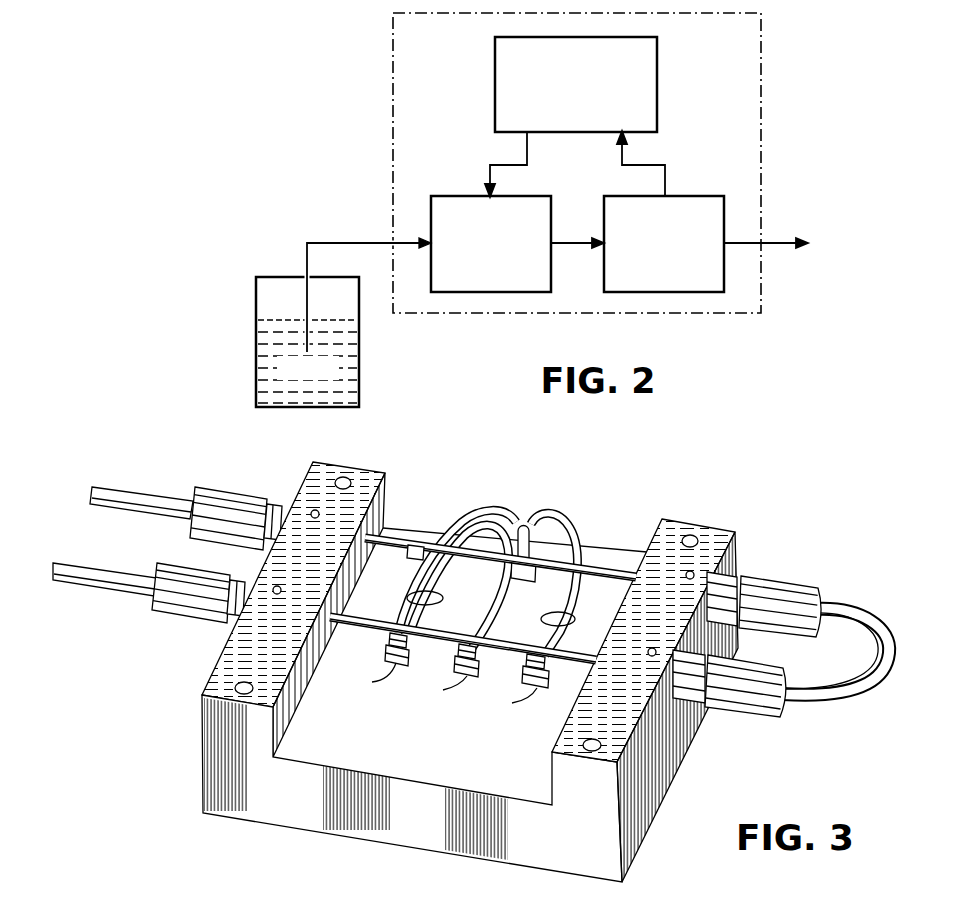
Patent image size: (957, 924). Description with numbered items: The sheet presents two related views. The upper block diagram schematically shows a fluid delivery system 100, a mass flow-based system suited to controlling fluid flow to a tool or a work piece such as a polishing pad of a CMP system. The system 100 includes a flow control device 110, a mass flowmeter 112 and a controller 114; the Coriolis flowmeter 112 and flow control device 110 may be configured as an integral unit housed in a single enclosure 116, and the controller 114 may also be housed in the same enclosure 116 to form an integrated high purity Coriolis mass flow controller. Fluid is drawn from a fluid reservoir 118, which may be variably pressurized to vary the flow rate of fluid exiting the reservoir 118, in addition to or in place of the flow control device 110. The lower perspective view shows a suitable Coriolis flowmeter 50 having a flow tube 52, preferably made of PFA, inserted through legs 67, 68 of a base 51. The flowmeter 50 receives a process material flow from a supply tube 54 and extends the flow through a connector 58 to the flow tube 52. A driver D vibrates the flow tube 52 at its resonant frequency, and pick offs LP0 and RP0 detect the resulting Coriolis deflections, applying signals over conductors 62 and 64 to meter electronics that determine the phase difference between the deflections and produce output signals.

In FIG. 2, the fluid delivery system 100 is at (782, 96).
In FIG. 2, the flow control device 110 is at (473, 196).
In FIG. 2, the mass flowmeter 112 is at (680, 196).
In FIG. 2, the controller 114 is at (657, 77).
In FIG. 2, the enclosure 116 is at (393, 90).
In FIG. 2, the fluid reservoir 118 is at (359, 345).
In FIG. 3, the Coriolis flowmeter 50 is at (165, 470).
In FIG. 3, the base 51 is at (427, 672).
In FIG. 3, the flow tube 52 is at (350, 613).
In FIG. 3, the supply tube 54 is at (90, 582).
In FIG. 3, the connector 58 is at (178, 612).
In FIG. 3, the conductor 62 is at (408, 598).
In FIG. 3, the conductor 64 is at (575, 621).
In FIG. 3, the leg of base 67 is at (212, 662).
In FIG. 3, the leg of base 68 is at (632, 704).